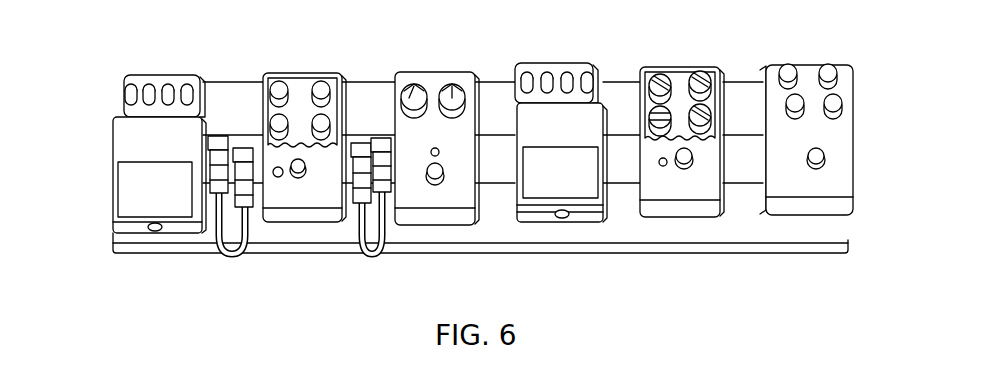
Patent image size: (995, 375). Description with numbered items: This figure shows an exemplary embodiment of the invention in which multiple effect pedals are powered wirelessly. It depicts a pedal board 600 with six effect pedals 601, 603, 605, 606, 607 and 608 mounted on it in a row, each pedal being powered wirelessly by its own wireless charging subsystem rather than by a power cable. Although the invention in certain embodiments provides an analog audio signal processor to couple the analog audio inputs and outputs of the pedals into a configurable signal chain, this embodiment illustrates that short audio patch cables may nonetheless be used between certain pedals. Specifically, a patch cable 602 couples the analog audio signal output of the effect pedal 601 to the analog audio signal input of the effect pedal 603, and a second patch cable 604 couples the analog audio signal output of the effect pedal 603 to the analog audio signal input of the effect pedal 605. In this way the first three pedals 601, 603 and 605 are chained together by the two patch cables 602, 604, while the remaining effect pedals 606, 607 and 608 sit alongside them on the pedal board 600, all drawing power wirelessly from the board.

The pedal board 600 is at (93, 103).
The effect pedal 601 is at (160, 76).
The patch cable 602 is at (228, 258).
The effect pedal 603 is at (302, 73).
The patch cable 604 is at (372, 258).
The effect pedal 605 is at (433, 72).
The effect pedal 606 is at (555, 63).
The effect pedal 607 is at (672, 66).
The effect pedal 608 is at (812, 66).